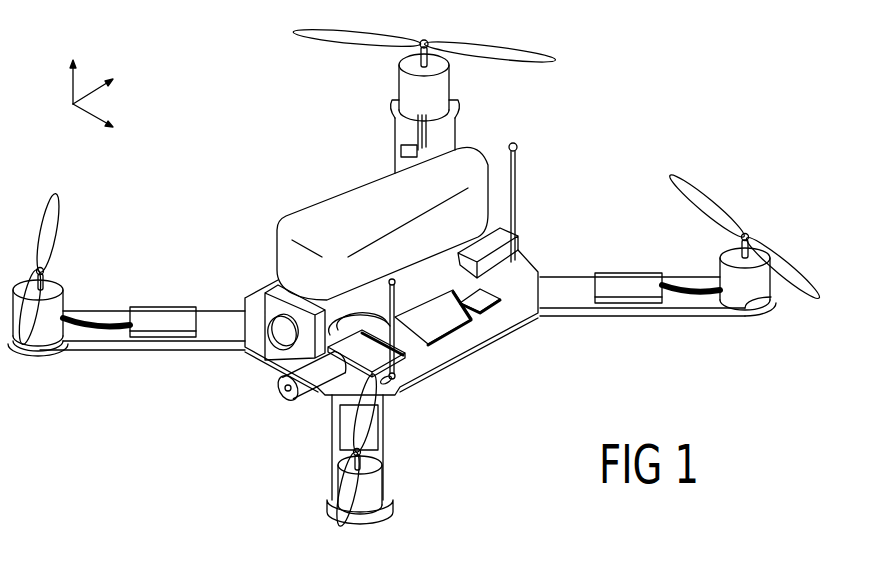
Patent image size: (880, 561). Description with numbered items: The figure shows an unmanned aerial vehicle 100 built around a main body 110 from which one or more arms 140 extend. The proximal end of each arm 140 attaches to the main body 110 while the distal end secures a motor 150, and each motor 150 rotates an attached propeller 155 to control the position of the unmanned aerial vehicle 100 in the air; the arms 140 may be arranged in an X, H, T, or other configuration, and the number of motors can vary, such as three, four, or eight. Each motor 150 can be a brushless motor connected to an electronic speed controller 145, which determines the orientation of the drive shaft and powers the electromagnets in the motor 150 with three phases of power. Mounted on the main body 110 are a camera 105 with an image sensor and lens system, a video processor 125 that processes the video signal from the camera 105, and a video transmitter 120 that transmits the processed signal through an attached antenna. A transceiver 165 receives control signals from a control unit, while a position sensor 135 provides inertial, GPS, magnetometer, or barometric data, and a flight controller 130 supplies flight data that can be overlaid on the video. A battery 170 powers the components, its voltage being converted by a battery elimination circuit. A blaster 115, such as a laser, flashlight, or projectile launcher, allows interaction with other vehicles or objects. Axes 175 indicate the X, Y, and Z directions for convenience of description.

The unmanned aerial vehicle 100 is at (416, 277).
The camera 105 is at (268, 302).
The main body 110 is at (253, 337).
The blaster 115 is at (300, 403).
The video transmitter 120 is at (405, 380).
The video processor 125 is at (415, 357).
The flight controller 130 is at (448, 323).
The position sensor 135 is at (495, 310).
The arm 140 is at (658, 311).
The electronic speed controller 145 is at (650, 300).
The motor 150 is at (767, 296).
The propeller 155 is at (695, 192).
The transceiver 165 is at (510, 247).
The battery 170 is at (345, 198).
The axes 175 is at (108, 62).